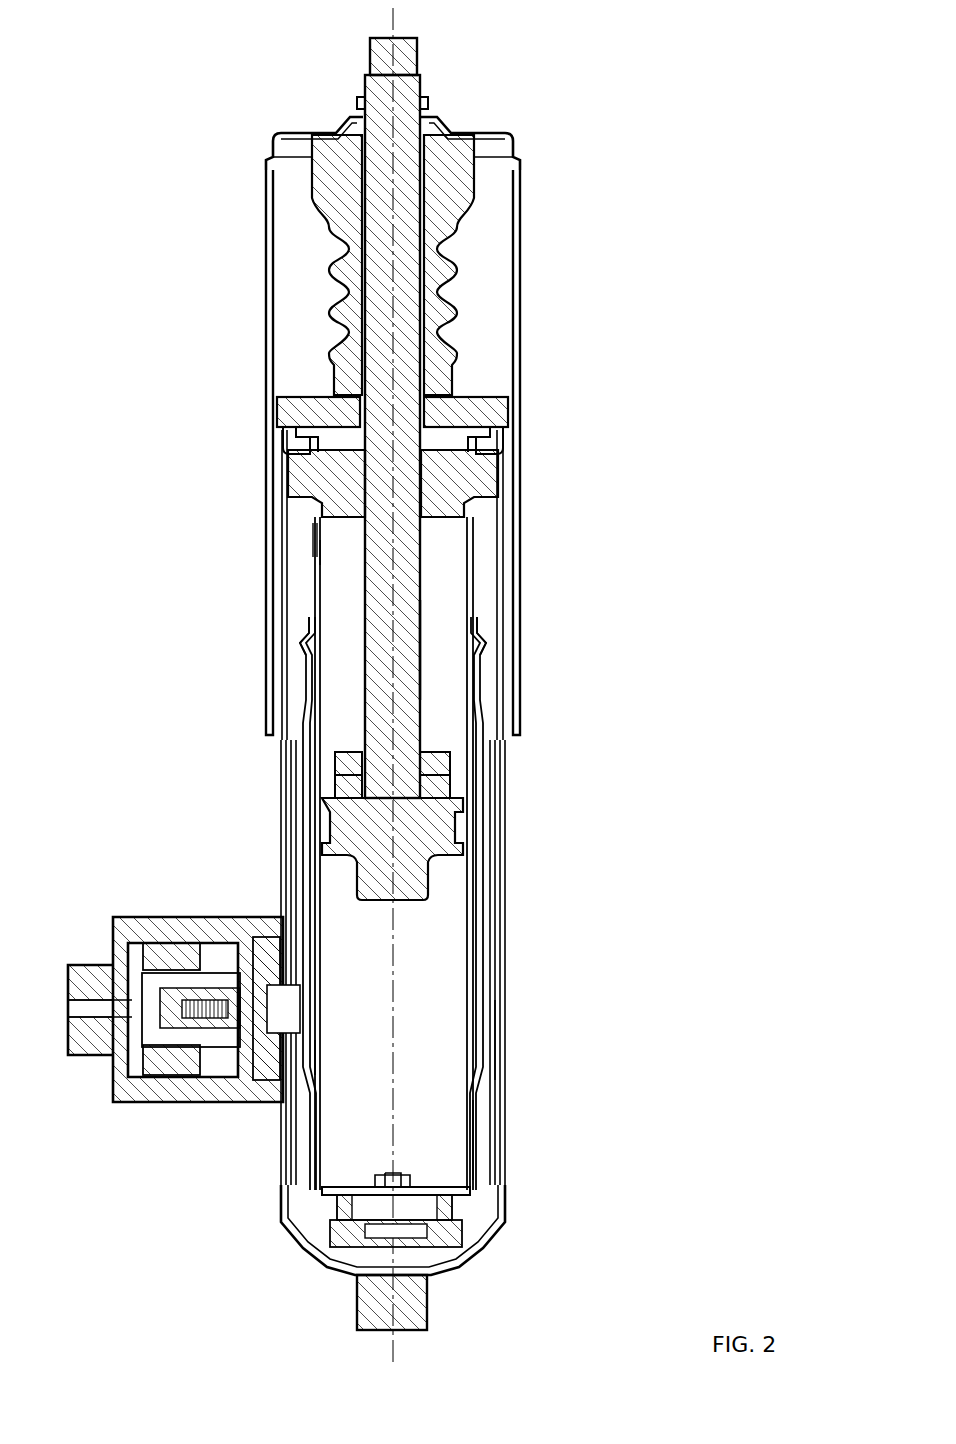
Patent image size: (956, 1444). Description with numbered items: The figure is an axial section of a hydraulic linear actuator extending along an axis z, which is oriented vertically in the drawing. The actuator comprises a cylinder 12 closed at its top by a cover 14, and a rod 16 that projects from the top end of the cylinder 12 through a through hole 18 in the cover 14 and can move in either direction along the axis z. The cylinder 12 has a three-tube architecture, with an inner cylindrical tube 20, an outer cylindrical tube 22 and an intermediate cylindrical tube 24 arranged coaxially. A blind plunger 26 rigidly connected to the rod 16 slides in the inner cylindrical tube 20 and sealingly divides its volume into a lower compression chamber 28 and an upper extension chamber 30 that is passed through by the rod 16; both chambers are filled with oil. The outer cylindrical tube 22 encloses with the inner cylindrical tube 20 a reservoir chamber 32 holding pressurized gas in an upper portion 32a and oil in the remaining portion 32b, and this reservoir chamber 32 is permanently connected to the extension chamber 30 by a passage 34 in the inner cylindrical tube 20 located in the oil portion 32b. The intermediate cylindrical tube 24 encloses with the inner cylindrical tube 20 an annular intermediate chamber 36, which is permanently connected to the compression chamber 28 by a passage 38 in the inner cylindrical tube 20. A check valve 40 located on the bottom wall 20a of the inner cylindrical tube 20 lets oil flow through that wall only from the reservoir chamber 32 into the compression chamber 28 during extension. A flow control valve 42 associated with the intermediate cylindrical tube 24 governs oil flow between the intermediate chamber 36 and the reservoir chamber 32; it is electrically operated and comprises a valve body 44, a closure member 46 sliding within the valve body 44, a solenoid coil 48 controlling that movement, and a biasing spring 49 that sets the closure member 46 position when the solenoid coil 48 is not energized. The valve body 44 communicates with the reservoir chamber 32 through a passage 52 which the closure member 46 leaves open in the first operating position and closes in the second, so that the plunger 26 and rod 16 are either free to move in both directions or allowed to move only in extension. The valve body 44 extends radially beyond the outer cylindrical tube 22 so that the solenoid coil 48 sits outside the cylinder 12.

The cylinder 12 is at (509, 868).
The cover 14 is at (507, 473).
The rod 16 is at (420, 60).
The through hole 18 is at (367, 477).
The inner cylindrical tube 20 is at (470, 1007).
The bottom wall of the inner cylindrical tube 20a is at (460, 1247).
The outer cylindrical tube 22 is at (510, 1097).
The intermediate cylindrical tube 24 is at (490, 933).
The plunger 26 is at (327, 825).
The compression chamber 28 is at (320, 1057).
The extension chamber 30 is at (437, 675).
The reservoir chamber 32 is at (500, 805).
The gas portion of the reservoir chamber 32a is at (303, 522).
The oil portion of the reservoir chamber 32b is at (298, 695).
The passage 34 is at (317, 553).
The annular intermediate chamber 36 is at (480, 1040).
The passage 38 is at (437, 1150).
The check valve 40 is at (440, 1178).
The flow control valve 42 is at (143, 914).
The valve body 44 is at (224, 1068).
The closure member 46 is at (228, 945).
The solenoid coil 48 is at (135, 1100).
The biasing spring 49 is at (190, 1022).
The passage 52 is at (285, 1128).
The axis z is at (332, 150).